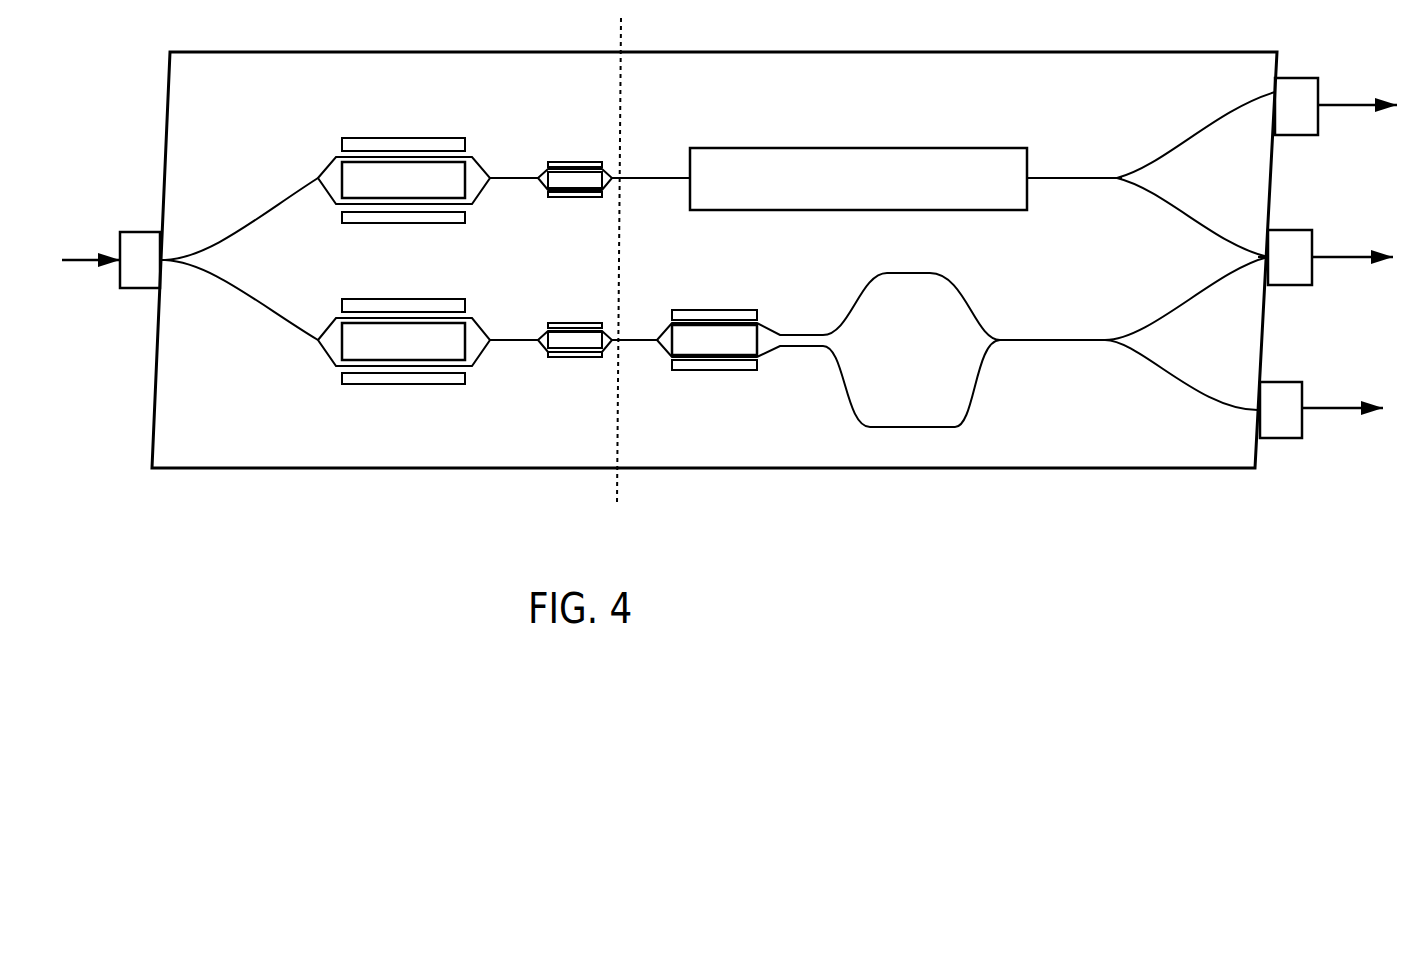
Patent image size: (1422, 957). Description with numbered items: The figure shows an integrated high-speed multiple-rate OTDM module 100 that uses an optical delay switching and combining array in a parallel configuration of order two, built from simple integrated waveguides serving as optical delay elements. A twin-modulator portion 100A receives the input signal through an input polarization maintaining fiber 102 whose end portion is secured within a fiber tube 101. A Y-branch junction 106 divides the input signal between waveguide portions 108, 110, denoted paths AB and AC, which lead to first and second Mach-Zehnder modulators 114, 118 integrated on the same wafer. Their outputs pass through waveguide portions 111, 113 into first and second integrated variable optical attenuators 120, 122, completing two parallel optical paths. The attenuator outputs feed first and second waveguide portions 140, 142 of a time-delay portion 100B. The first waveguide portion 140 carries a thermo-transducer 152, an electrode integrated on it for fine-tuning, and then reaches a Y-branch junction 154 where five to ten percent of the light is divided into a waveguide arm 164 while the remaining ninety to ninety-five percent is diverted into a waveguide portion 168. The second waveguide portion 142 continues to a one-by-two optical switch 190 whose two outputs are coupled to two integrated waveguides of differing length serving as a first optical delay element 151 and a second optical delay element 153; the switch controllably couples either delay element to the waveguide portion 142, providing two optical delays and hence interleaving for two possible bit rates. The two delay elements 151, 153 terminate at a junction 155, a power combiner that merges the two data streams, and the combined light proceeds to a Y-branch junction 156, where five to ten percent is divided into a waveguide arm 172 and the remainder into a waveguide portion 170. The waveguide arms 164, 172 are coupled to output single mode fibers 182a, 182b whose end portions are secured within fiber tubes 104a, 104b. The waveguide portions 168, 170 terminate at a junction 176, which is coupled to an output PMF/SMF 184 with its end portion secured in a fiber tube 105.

The multiple-rate OTDM module 100 is at (935, 508).
The twin-modulator portion 100A is at (586, 37).
The time-delay portion 100B is at (649, 260).
The fiber tube 101 is at (133, 230).
The input polarization maintaining fiber 102 is at (85, 265).
The Y-branch junction 106 is at (175, 263).
The waveguide portion 108 is at (260, 217).
The waveguide portion 110 is at (257, 313).
The waveguide portion 111 is at (517, 180).
The waveguide portion 113 is at (517, 342).
The first Mach-Zehnder modulator 114 is at (365, 138).
The second Mach-Zehnder modulator 118 is at (363, 298).
The first variable optical attenuator 120 is at (587, 200).
The second variable optical attenuator 122 is at (580, 360).
The first waveguide portion 140 is at (648, 176).
The second waveguide portion 142 is at (655, 338).
The optical delay element L1 151 is at (975, 315).
The thermo-transducer 152 is at (810, 148).
The optical delay element L2 153 is at (980, 397).
The Y-branch junction 154 is at (1110, 172).
The junction 155 is at (1008, 343).
The Y-branch junction 156 is at (1095, 332).
The waveguide arm 164 is at (1187, 130).
The waveguide portion 168 is at (1193, 217).
The waveguide portion 170 is at (1152, 315).
The waveguide arm 172 is at (1153, 363).
The junction 176 is at (1243, 265).
The 1:2 optical switch 190 is at (717, 372).
The fiber tube 104a is at (1290, 137).
The fiber tube 104b is at (1280, 440).
The fiber tube 105 is at (1285, 287).
The output single mode fiber 182a is at (1347, 108).
The output single mode fiber 182b is at (1345, 412).
The output PMF/SMF 184 is at (1347, 260).